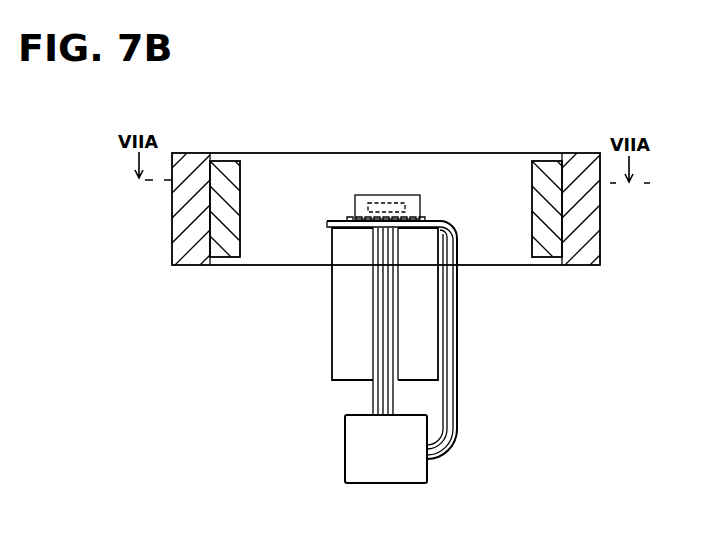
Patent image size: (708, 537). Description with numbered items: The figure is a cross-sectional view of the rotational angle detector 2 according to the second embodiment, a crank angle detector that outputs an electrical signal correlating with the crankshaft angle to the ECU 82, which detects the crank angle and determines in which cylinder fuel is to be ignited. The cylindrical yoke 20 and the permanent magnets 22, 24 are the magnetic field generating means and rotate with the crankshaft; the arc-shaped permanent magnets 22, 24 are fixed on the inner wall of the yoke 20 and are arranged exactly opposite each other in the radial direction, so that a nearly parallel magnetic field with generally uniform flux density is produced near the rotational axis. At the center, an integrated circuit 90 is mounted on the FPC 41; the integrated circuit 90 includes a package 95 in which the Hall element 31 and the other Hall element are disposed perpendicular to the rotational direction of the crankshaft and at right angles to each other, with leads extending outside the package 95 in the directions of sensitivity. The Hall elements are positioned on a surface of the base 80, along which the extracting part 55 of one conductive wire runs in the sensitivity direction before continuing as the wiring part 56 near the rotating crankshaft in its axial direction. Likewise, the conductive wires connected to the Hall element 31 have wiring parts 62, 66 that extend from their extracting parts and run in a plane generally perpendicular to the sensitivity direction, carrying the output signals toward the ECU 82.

The rotational angle detector 2 is at (587, 126).
The yoke 20 is at (181, 222).
The permanent magnet 22 is at (236, 167).
The permanent magnet 24 is at (548, 170).
The Hall element 31 is at (366, 203).
The FPC 41 is at (456, 230).
The extracting part 55 is at (437, 221).
The wiring part 56 is at (456, 355).
The wiring part 62 is at (392, 306).
The wiring part 66 is at (372, 306).
The base 80 is at (338, 356).
The ECU 82 is at (345, 452).
The integrated circuit 90 is at (380, 196).
The package 95 is at (394, 197).